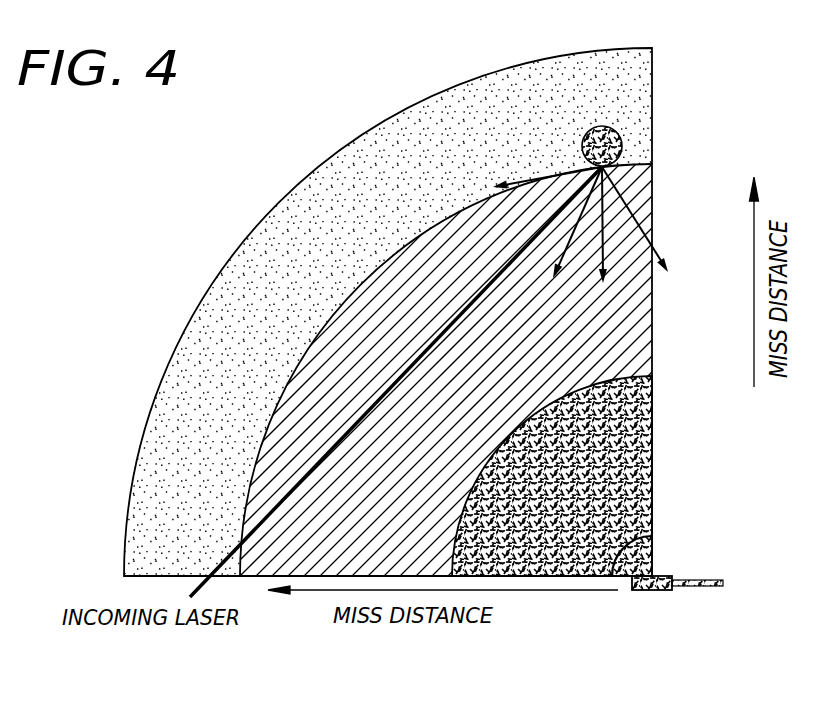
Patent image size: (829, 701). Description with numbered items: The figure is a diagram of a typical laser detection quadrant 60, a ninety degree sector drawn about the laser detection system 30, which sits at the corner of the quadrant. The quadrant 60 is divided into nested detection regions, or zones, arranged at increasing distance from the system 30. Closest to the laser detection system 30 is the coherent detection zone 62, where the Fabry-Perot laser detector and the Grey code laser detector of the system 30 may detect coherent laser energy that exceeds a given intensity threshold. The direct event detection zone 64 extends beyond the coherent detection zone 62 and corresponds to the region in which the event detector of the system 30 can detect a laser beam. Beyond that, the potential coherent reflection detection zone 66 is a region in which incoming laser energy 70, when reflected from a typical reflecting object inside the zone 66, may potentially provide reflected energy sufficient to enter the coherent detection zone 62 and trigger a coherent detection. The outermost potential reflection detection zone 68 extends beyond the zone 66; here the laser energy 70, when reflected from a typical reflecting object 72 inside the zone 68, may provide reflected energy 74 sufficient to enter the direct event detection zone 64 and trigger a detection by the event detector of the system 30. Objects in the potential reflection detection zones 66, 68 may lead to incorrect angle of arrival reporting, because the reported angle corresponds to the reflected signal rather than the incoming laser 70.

The laser detection system 30 is at (650, 602).
The quadrant 60 is at (408, 93).
The coherent detection zone 62 is at (652, 556).
The direct event detection zone 64 is at (650, 448).
The potential coherent reflection detection zone 66 is at (630, 347).
The potential reflection detection zone 68 is at (638, 88).
The laser energy 70 is at (192, 591).
The reflecting object 72 is at (622, 141).
The reflected energy 74 is at (656, 244).